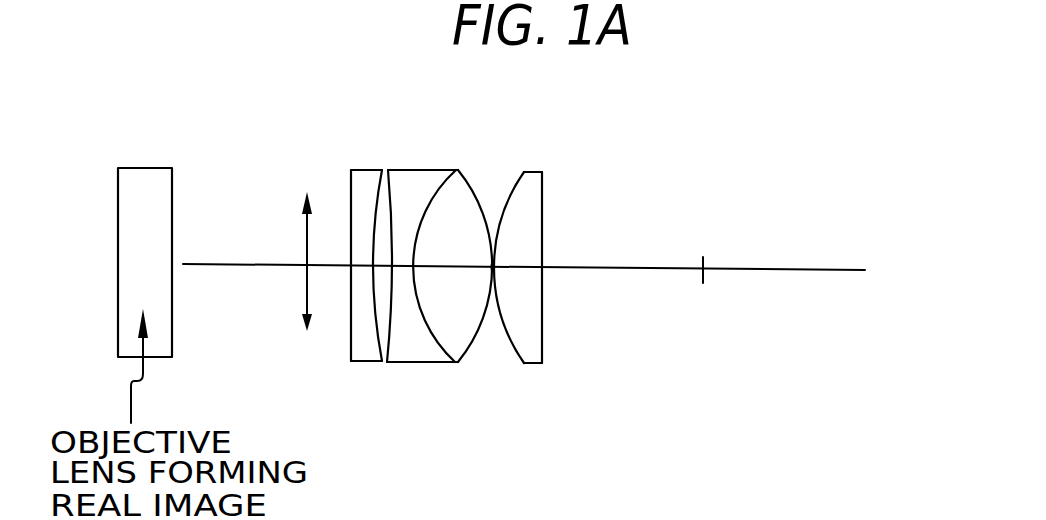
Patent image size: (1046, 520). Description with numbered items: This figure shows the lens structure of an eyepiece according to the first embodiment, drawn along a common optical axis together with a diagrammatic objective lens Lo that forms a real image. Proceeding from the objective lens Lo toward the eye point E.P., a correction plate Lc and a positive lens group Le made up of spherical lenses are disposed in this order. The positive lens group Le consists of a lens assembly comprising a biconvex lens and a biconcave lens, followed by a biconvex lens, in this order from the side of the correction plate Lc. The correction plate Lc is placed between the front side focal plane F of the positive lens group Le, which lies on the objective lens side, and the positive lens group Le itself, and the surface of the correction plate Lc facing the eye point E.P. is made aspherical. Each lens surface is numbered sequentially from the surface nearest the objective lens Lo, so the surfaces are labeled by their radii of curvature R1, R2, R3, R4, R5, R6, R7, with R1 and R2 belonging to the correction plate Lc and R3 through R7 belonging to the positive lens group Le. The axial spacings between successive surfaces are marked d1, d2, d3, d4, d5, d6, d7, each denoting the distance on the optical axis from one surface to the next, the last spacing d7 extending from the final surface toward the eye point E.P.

The objective lens Lo is at (143, 178).
The correction plate Lc is at (349, 259).
The positive lens group Le is at (506, 262).
The front side focal plane F is at (305, 292).
The eye point E.P. is at (700, 253).
The radius of curvature of the first surface R1 is at (351, 338).
The radius of curvature of the second surface R2 is at (376, 343).
The radius of curvature of the third surface R3 is at (394, 361).
The radius of curvature of the fourth surface R4 is at (443, 353).
The radius of curvature of the fifth surface R5 is at (482, 348).
The radius of curvature of the sixth surface R6 is at (513, 350).
The radius of curvature of the seventh surface R7 is at (543, 352).
The spacing between the first and second surfaces d1 is at (363, 268).
The spacing between the second and third surfaces d2 is at (380, 268).
The spacing between the third and fourth surfaces d3 is at (402, 262).
The spacing between the fourth and fifth surfaces d4 is at (449, 251).
The spacing between the fifth and sixth surfaces d5 is at (493, 270).
The spacing between the sixth and seventh surfaces d6 is at (519, 251).
The spacing between the seventh surface and the eye point d7 is at (627, 251).